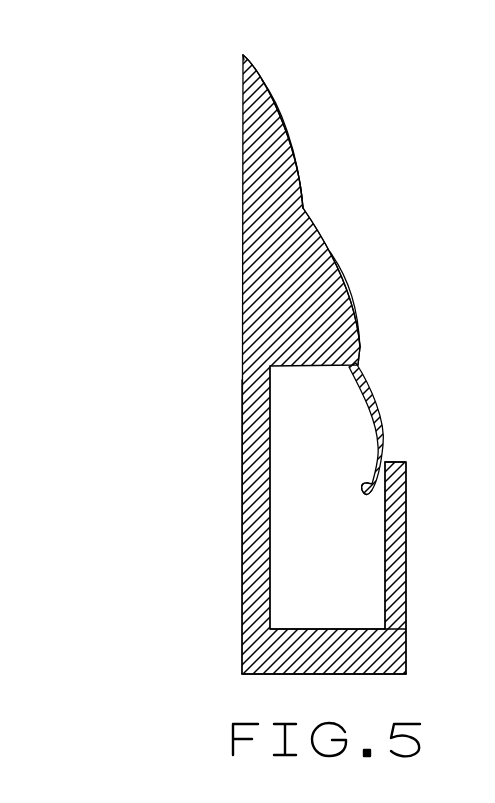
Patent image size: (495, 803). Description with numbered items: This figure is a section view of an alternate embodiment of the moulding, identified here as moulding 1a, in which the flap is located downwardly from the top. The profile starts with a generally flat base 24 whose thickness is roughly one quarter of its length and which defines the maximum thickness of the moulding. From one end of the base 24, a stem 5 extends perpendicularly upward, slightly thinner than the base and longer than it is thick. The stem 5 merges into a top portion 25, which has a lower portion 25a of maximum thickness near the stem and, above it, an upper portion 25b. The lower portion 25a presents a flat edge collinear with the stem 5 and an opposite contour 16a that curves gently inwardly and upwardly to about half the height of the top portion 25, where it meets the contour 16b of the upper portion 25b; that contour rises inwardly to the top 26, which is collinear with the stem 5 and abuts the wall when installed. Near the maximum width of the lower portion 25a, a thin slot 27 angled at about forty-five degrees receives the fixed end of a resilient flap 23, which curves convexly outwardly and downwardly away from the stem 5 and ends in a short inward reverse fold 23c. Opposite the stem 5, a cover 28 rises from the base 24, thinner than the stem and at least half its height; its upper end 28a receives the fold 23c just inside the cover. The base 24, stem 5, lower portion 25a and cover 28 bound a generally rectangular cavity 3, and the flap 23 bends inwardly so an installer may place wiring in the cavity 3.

The door trim / weather strip assembly 1a is at (190, 68).
The cavity 3 is at (340, 570).
The stem 5 is at (252, 583).
The contour of the lower portion 16a is at (322, 238).
The contour of the upper portion 16b is at (293, 152).
The flap 23 is at (387, 392).
The reverse fold of the free end 23c is at (365, 483).
The base 24 is at (336, 675).
The top portion 25 is at (230, 56).
The lower portion 25a is at (343, 279).
The upper surface portion 25b is at (275, 99).
The top 26 is at (247, 53).
The slot 27 is at (362, 340).
The cover 28 is at (405, 609).
The side wall top 28a is at (397, 477).